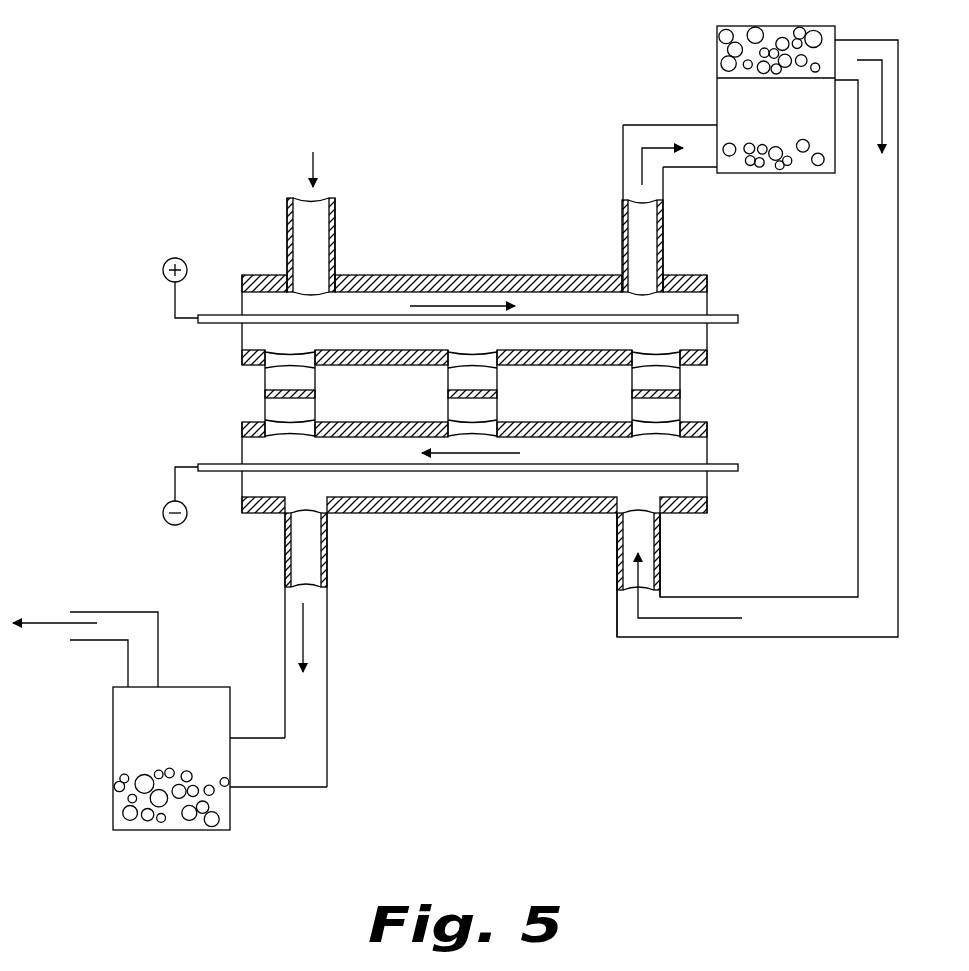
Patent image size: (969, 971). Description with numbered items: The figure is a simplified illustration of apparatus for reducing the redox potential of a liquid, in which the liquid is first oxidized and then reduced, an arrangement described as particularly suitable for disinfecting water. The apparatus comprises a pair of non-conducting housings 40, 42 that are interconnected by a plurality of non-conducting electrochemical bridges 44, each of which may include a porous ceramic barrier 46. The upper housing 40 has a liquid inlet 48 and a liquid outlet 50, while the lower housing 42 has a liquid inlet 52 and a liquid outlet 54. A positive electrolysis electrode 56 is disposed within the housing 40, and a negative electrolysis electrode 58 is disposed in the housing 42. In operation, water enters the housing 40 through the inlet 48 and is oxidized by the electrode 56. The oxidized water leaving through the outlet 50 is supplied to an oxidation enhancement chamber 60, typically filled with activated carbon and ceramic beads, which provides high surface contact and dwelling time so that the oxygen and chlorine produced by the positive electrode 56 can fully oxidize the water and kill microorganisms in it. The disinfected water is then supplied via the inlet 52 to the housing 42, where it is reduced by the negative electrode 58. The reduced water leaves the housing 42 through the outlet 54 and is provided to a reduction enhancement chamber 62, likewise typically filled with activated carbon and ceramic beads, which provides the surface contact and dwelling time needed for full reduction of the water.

The non-conducting housing 40 is at (460, 275).
The non-conducting housing 42 is at (430, 513).
The non-conducting electrochemical bridge 44 is at (448, 378).
The porous ceramic barrier 46 is at (265, 383).
The liquid inlet 48 is at (336, 226).
The liquid outlet 50 is at (663, 228).
The liquid inlet 52 is at (660, 540).
The liquid outlet 54 is at (283, 530).
The positive electrolysis electrode 56 is at (565, 318).
The negative electrolysis electrode 58 is at (522, 471).
The oxidation enhancement chamber 60 is at (717, 50).
The reduction enhancement chamber 62 is at (113, 745).